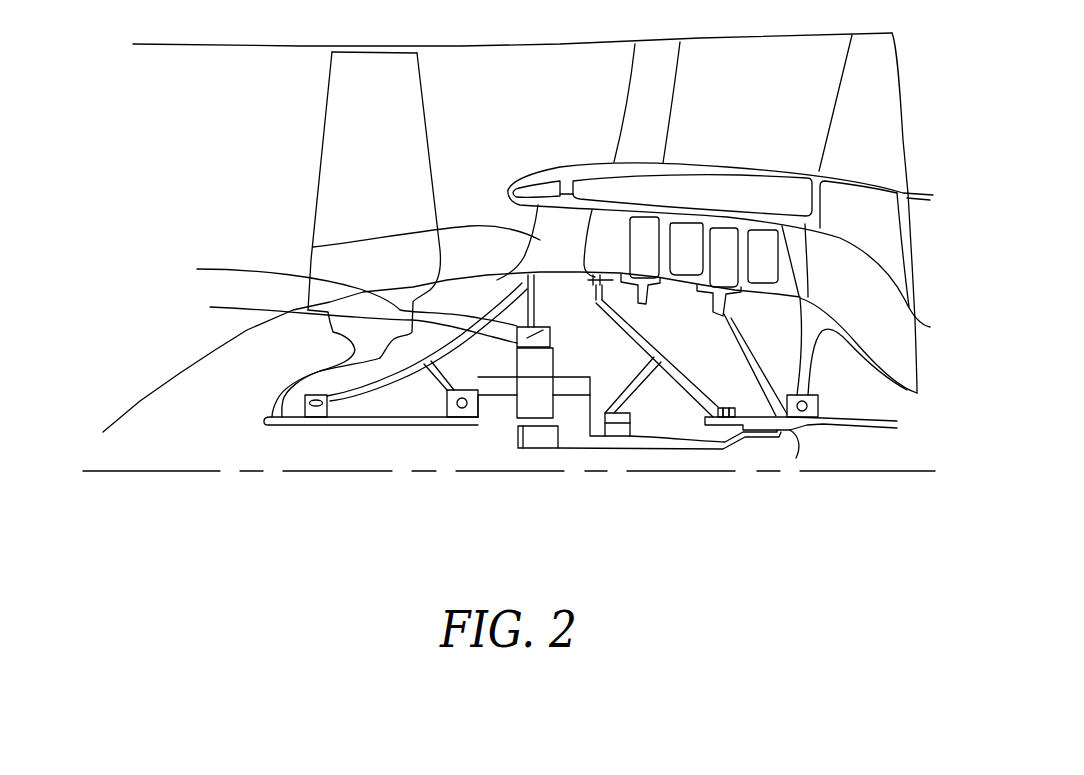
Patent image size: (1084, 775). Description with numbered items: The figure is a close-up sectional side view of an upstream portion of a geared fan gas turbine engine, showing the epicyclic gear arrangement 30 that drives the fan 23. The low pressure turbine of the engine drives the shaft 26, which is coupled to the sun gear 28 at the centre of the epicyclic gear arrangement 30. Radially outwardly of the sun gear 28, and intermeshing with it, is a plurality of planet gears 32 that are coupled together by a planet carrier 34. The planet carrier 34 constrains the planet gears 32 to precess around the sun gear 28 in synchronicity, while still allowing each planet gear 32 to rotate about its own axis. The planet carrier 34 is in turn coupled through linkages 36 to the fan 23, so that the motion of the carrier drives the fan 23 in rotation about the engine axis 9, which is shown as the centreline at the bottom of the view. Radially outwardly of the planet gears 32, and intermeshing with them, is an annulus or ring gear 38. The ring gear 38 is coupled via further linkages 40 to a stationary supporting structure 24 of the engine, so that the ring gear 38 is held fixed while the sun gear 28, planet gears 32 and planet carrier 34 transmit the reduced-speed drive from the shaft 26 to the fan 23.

The engine axis 9 is at (200, 472).
The fan 23 is at (333, 160).
The stationary supporting structure 24 is at (313, 247).
The shaft 26 is at (667, 452).
The sun gear 28 is at (538, 437).
The epicyclic gear arrangement 30 is at (497, 420).
The planet gears 32 is at (523, 408).
The planet carrier 34 is at (587, 408).
The linkages 36 is at (482, 425).
The ring gear 38 is at (348, 319).
The linkages 40 is at (342, 292).